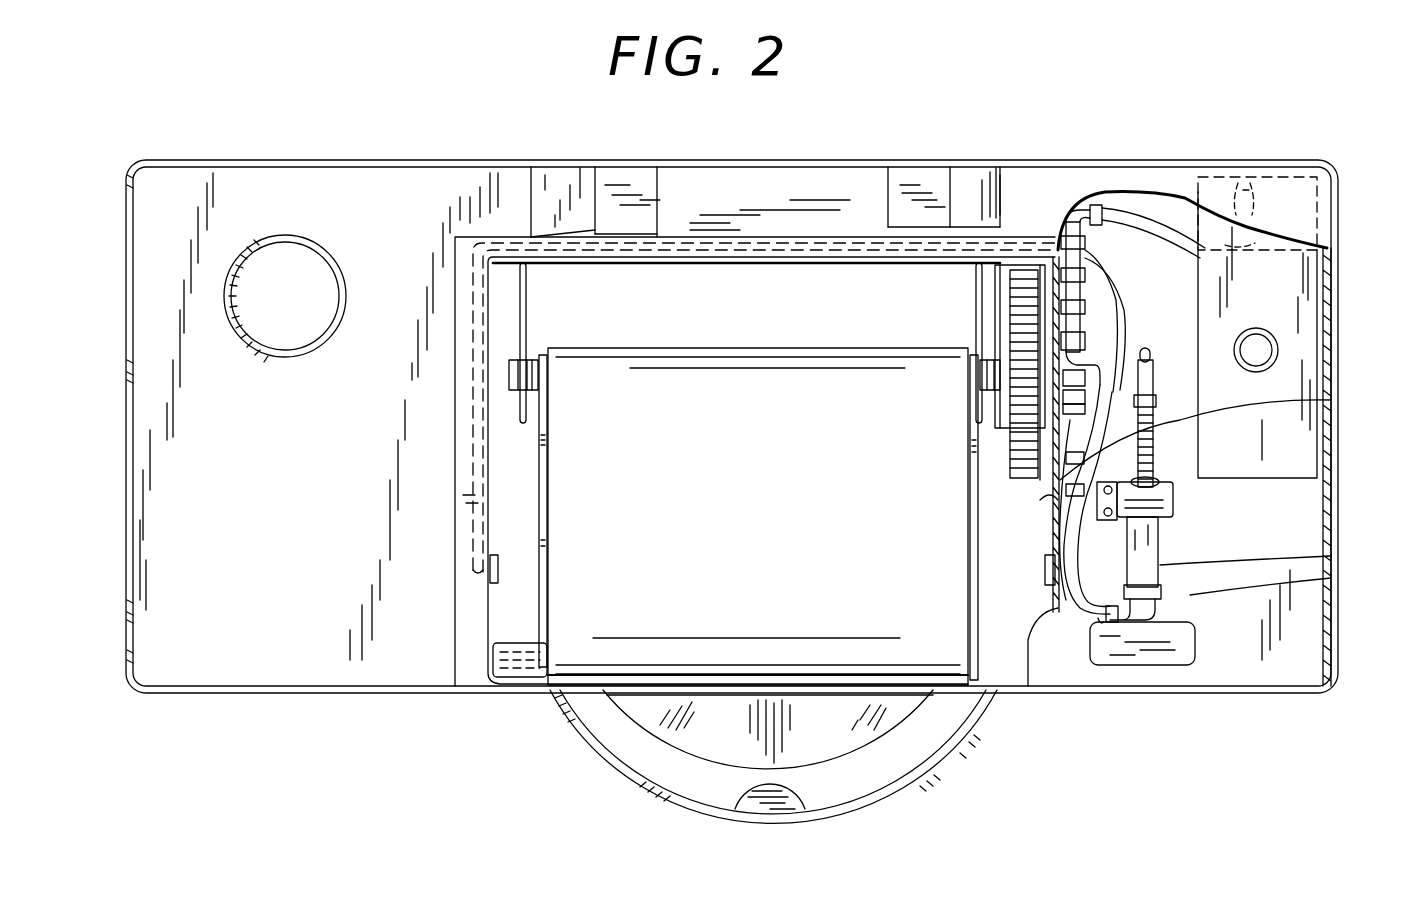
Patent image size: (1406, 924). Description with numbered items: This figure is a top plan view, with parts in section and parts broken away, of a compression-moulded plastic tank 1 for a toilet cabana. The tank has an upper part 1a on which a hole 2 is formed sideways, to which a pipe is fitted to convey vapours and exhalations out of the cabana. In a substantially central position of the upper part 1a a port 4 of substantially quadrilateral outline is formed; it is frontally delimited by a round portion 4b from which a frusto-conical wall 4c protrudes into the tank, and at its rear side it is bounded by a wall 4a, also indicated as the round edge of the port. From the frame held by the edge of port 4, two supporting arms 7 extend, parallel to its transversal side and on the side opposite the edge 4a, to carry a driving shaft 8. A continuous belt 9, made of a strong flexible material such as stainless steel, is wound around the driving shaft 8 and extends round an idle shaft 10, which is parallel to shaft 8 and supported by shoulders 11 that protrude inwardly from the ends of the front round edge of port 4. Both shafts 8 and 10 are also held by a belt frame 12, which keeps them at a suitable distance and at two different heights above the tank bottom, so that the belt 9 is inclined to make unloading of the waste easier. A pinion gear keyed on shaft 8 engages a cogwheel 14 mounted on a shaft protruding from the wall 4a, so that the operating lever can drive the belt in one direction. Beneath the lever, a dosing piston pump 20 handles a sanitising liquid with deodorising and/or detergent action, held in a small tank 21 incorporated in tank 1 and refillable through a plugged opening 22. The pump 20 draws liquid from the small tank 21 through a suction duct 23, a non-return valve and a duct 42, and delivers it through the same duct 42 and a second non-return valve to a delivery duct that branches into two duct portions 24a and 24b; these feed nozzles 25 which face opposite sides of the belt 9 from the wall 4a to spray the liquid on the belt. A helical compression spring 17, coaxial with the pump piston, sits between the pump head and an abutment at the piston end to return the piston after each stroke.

The tank 1 is at (278, 158).
The upper part 1a is at (358, 187).
The hole 2 is at (317, 318).
The port 4 is at (822, 279).
The wall 4a is at (1056, 506).
The round portion 4b is at (632, 748).
The frusto-conical wall 4c is at (888, 718).
The supporting arms 7 is at (527, 326).
The driving shaft 8 is at (996, 352).
The continuous belt 9 is at (563, 487).
The idle shaft 10 is at (523, 672).
The shoulders 11 is at (505, 672).
The belt frame 12 is at (540, 600).
The cogwheel 14 is at (1027, 275).
The helical compression spring 17 is at (1153, 465).
The dosing piston pump 20 is at (1160, 577).
The small tank 21 is at (1300, 470).
The plugged opening 22 is at (1266, 356).
The suction duct 23 is at (1150, 222).
The duct portion 24a is at (1126, 308).
The duct portion 24b is at (1100, 528).
The nozzles 25 is at (490, 577).
The duct 42 is at (1100, 622).